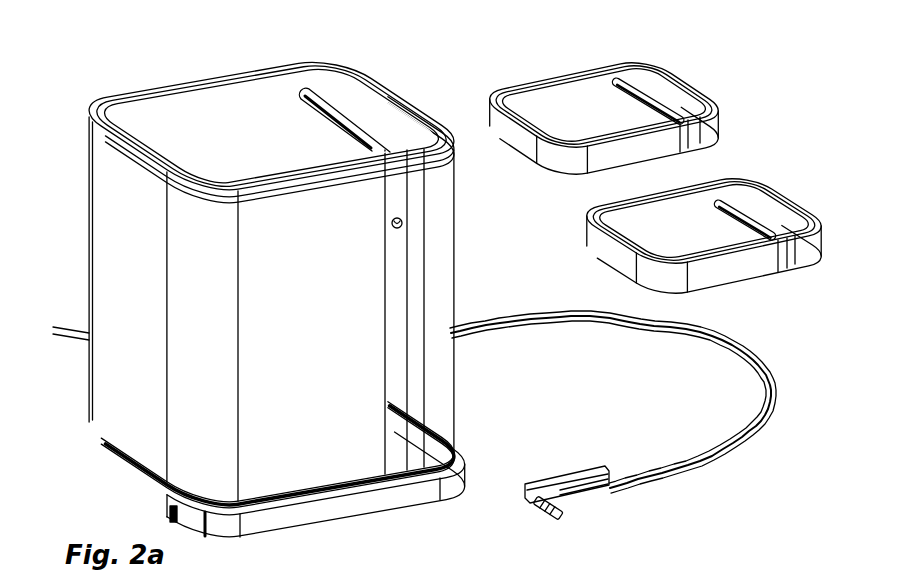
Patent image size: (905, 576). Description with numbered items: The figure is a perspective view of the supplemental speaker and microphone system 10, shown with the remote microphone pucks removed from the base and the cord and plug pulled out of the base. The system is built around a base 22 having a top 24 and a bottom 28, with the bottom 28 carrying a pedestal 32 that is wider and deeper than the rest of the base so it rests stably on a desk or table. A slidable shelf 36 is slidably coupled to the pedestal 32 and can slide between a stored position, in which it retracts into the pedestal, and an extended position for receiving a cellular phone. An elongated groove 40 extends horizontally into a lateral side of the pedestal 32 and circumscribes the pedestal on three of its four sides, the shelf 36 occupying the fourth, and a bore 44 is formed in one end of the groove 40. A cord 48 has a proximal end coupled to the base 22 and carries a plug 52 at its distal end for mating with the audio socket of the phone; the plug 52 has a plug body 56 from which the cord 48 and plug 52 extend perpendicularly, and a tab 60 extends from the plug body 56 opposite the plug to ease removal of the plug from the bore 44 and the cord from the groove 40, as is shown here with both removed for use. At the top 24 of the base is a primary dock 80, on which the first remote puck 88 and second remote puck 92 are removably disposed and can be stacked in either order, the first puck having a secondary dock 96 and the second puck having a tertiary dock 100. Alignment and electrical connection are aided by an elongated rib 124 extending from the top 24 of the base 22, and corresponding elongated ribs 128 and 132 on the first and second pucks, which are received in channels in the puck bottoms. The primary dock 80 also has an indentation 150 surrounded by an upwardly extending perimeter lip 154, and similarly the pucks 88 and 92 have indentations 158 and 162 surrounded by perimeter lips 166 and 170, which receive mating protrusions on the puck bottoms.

The supplemental speaker and microphone system 10 is at (88, 80).
The base 22 is at (105, 244).
The top 24 is at (90, 116).
The bottom 28 is at (95, 406).
The pedestal 32 is at (468, 464).
The slidable shelf 36 is at (318, 515).
The elongated groove 40 is at (115, 464).
The bore 44 is at (168, 512).
The cord 48 is at (685, 340).
The plug 52 is at (558, 518).
The plug body 56 is at (602, 496).
The tab 60 is at (565, 483).
The primary dock 80 is at (235, 94).
The first remote puck 88 is at (770, 198).
The second remote puck 92 is at (548, 94).
The secondary dock 96 is at (635, 218).
The tertiary dock 100 is at (530, 110).
The elongated rib 124 is at (340, 112).
The elongated rib 128 is at (800, 222).
The elongated rib 132 is at (650, 100).
The indentation 150 is at (185, 104).
The perimeter lip 154 is at (300, 64).
The indentation 158 is at (680, 210).
The indentation 162 is at (590, 88).
The perimeter lip 166 is at (746, 265).
The perimeter lip 170 is at (617, 66).